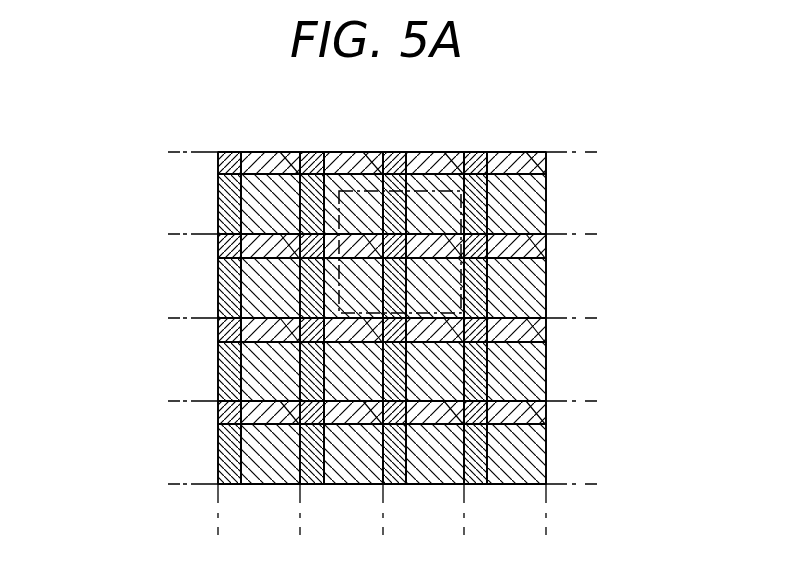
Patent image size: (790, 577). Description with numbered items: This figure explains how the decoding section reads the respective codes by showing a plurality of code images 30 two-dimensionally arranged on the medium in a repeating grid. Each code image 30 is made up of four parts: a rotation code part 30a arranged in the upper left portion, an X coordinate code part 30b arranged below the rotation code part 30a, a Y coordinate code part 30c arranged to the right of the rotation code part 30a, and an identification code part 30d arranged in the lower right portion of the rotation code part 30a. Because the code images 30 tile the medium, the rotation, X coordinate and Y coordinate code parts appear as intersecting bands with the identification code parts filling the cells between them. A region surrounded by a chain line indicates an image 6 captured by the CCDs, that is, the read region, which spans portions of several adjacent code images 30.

The code image 30 is at (194, 178).
The rotation code part 30a is at (225, 155).
The X coordinate code part 30b is at (280, 165).
The Y coordinate code part 30c is at (217, 215).
The identification code part 30d is at (258, 226).
The captured image 6 is at (462, 195).